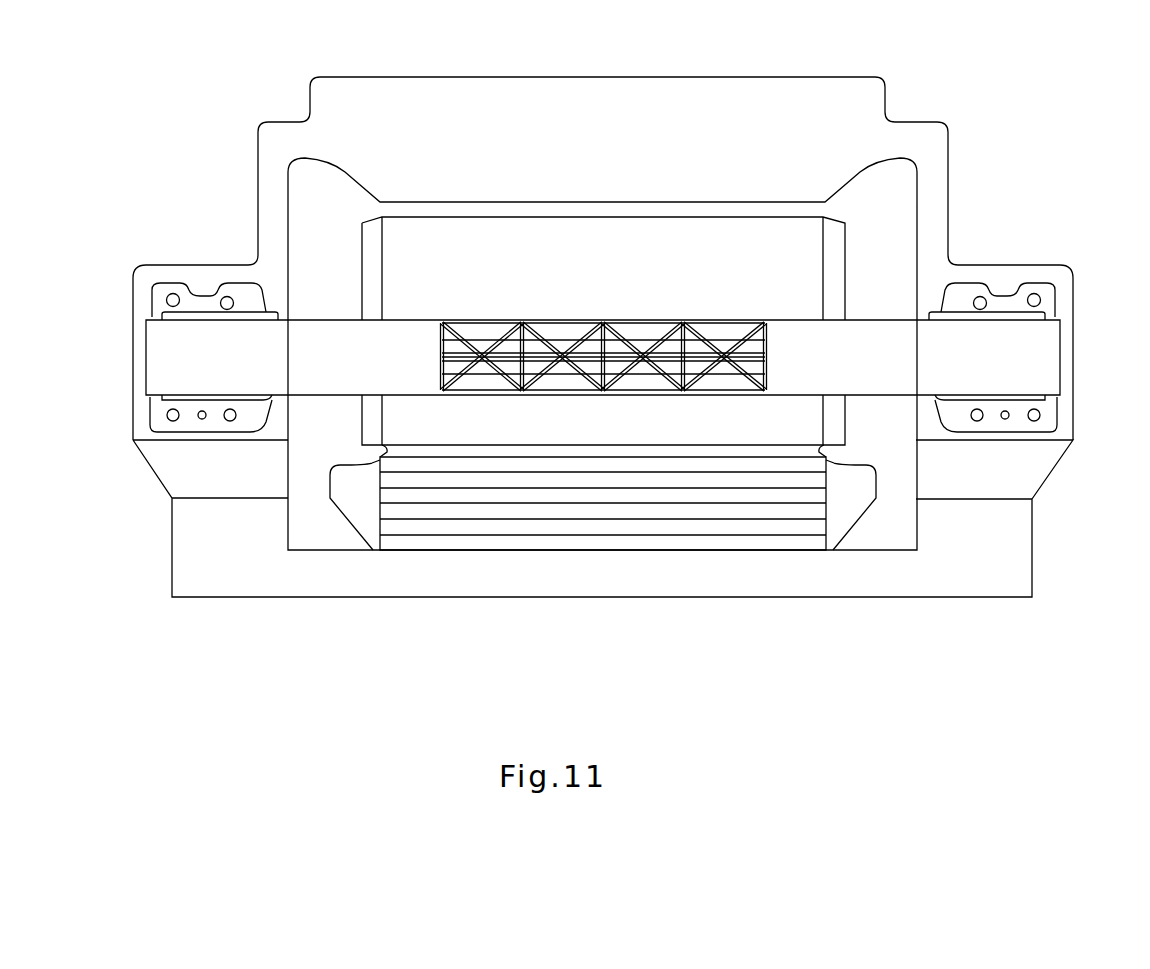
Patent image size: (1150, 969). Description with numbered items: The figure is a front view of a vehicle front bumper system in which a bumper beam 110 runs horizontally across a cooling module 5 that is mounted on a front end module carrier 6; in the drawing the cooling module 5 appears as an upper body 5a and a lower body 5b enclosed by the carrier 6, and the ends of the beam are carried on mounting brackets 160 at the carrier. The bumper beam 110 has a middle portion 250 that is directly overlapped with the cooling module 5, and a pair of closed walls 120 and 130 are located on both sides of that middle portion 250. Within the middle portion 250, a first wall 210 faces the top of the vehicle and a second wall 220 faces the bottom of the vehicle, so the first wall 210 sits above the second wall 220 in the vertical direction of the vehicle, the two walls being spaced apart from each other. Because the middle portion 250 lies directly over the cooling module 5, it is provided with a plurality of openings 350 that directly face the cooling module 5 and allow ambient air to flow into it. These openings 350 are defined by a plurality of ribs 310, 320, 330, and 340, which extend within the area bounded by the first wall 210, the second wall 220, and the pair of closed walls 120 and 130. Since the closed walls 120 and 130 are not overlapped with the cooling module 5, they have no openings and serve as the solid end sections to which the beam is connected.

The cooling module 5 is at (652, 214).
The upper actuator body 5a is at (517, 240).
The lower actuator body 5b is at (731, 525).
The front end module (FEM) carrier 6 is at (591, 90).
The bumper beam 110 is at (527, 295).
The closed wall 120 is at (160, 357).
The closed wall 130 is at (1045, 357).
The bracket 160 is at (158, 302).
The first wall 210 is at (487, 323).
The second wall 220 is at (552, 397).
The middle portion 250 is at (652, 317).
The rib 310 is at (690, 333).
The rib 320 is at (619, 358).
The rib 330 is at (663, 377).
The rib 340 is at (630, 335).
The openings 350 is at (575, 328).